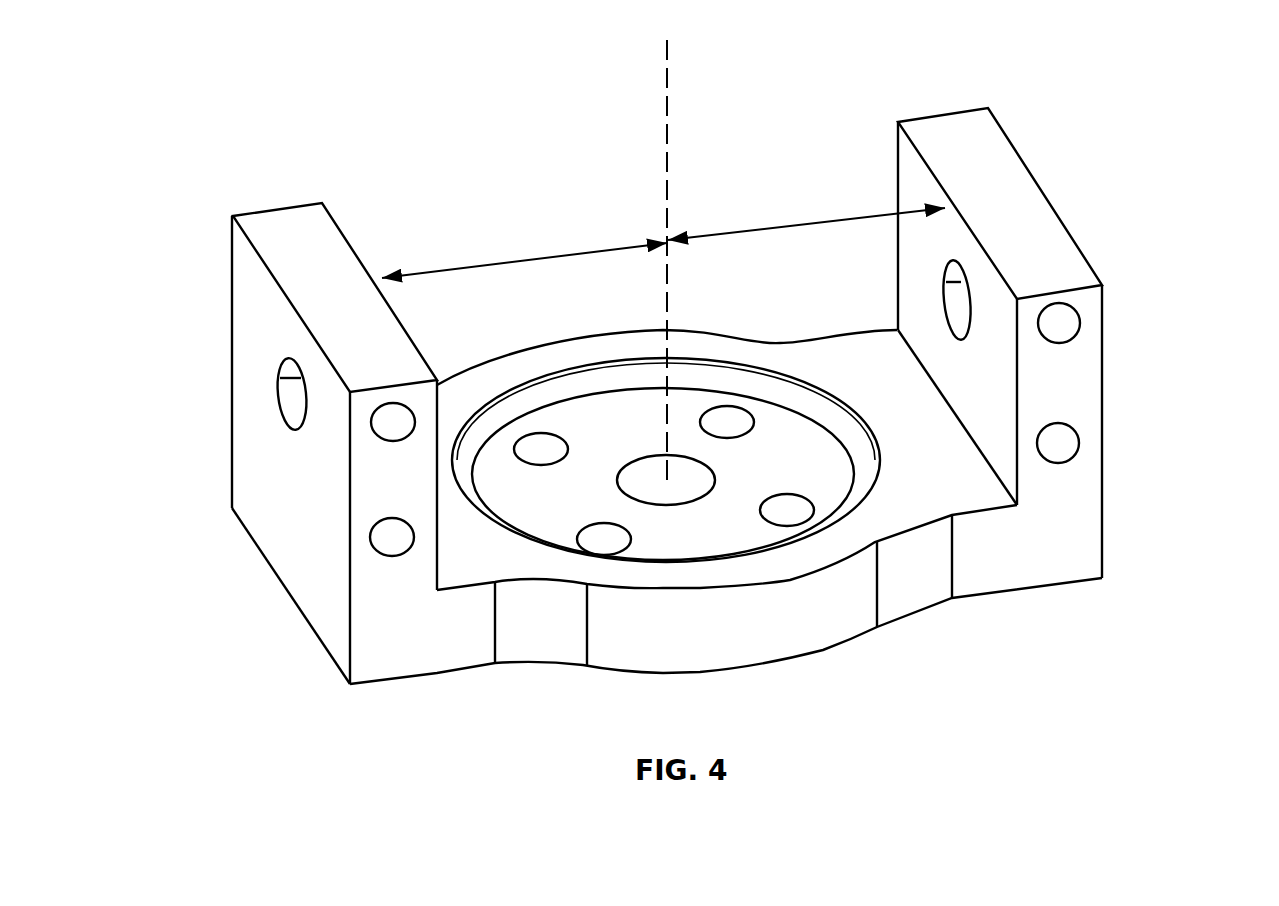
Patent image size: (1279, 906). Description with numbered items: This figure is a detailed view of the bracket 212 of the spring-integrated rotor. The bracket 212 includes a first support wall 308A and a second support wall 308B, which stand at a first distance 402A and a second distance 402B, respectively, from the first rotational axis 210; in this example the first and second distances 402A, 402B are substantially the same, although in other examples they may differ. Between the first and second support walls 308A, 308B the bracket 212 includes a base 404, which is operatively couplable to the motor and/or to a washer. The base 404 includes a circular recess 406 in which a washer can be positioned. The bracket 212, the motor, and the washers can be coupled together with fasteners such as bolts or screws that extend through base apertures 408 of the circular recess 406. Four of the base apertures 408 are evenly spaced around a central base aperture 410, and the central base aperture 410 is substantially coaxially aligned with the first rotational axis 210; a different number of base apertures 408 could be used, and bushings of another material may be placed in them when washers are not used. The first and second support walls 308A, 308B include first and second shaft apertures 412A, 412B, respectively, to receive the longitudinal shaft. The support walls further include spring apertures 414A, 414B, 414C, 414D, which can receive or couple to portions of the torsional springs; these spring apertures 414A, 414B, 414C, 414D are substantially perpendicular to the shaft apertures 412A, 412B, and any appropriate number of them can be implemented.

The bracket 212 is at (221, 125).
The first rotational axis 210 is at (667, 63).
The first support wall 308A is at (233, 293).
The second support wall 308B is at (1028, 165).
The first distance 402A is at (546, 243).
The second distance 402B is at (868, 203).
The base 404 is at (872, 630).
The circular recess 406 is at (720, 558).
The base apertures 408 is at (723, 408).
The central base aperture 410 is at (647, 455).
The first shaft aperture 412A is at (279, 400).
The second shaft aperture 412B is at (962, 270).
The spring aperture 414A is at (372, 540).
The spring aperture 414B is at (1077, 320).
The spring aperture 414C is at (1078, 436).
The spring aperture 414D is at (372, 425).